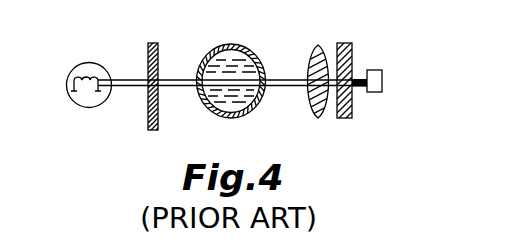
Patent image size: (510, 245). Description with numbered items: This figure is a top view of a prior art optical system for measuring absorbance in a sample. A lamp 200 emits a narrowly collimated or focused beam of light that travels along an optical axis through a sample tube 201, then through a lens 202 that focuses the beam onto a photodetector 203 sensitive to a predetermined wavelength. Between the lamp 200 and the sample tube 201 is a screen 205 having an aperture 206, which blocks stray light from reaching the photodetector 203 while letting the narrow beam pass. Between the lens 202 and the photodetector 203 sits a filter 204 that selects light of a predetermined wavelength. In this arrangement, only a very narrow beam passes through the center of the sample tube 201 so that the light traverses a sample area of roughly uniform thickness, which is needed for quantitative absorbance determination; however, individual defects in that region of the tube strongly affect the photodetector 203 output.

The lamp 200 is at (88, 62).
The sample tube 201 is at (238, 46).
The lens 202 is at (317, 45).
The photodetector 203 is at (382, 72).
The filter 204 is at (343, 43).
The screen 205 is at (150, 43).
The aperture 206 is at (158, 80).